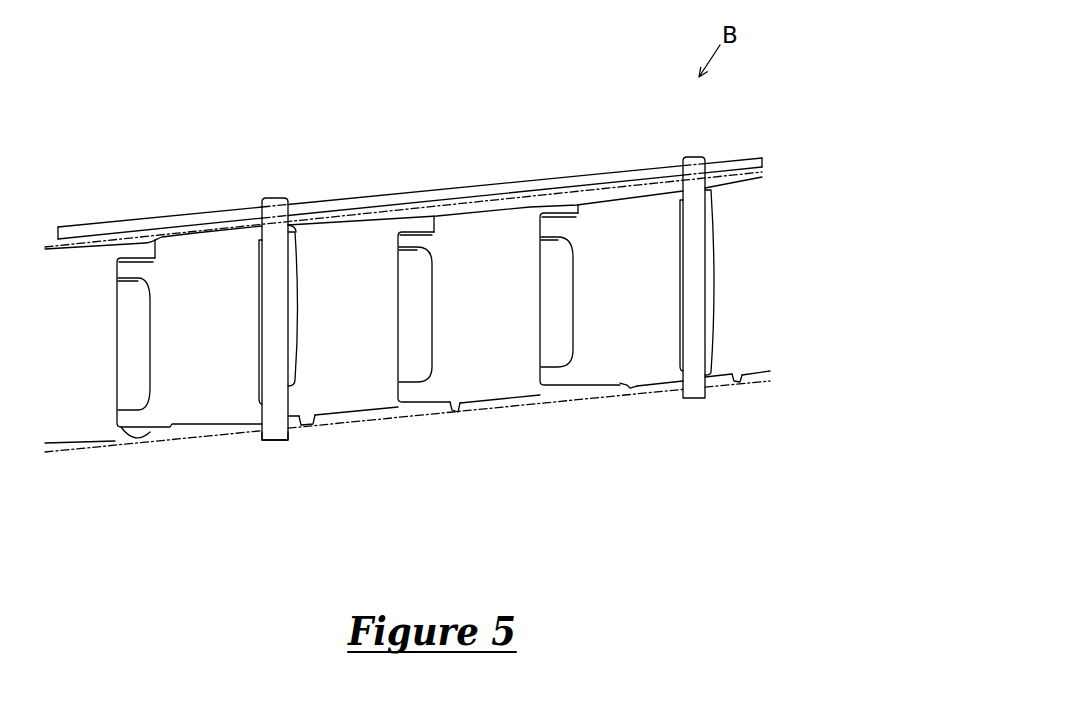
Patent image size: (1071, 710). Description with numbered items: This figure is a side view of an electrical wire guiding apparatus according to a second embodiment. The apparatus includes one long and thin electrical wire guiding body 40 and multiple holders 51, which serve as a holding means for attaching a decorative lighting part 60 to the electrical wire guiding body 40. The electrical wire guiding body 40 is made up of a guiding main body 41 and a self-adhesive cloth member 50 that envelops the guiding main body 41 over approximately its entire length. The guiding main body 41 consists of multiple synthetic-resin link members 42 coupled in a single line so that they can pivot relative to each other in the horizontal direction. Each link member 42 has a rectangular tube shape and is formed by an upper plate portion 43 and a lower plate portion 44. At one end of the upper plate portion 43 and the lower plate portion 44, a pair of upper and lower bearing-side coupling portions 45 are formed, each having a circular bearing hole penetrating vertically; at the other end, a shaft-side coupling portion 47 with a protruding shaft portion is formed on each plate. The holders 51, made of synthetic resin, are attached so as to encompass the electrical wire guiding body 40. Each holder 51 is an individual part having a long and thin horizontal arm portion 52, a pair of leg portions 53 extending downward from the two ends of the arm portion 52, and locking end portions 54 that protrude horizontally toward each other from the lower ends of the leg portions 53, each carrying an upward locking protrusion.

The electrical wire guiding body 40 is at (591, 130).
The guiding main body 41 is at (447, 130).
The link member 42 is at (363, 375).
The upper plate portion 43 is at (351, 220).
The lower plate portion 44 is at (372, 415).
The bearing-side coupling portion 45 is at (417, 219).
The shaft-side coupling portion 47 is at (432, 243).
The self-adhesive cloth member 50 is at (590, 190).
The holder 51 is at (290, 198).
The arm portion 52 is at (268, 198).
The leg portion 53 is at (273, 323).
The locking end portion 54 is at (277, 442).
The decorative lighting part 60 is at (153, 221).